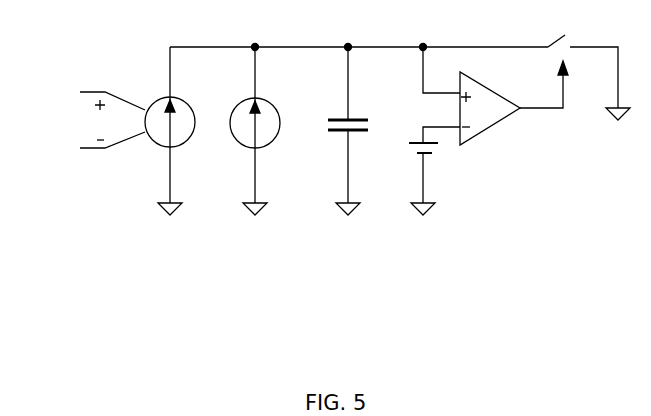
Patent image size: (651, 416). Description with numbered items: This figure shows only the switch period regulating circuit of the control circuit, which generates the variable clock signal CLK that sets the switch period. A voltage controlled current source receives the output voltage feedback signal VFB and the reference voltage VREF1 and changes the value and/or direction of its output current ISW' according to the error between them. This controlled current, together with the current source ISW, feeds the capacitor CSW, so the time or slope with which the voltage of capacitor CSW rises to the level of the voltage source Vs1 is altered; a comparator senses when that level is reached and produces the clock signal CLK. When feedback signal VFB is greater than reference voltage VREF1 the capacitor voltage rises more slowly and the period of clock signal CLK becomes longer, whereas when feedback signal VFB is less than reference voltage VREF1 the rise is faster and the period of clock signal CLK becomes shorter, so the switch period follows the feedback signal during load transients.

The voltage controlled current source output current ISW' is at (178, 131).
The reference voltage VREF1 is at (86, 95).
The output voltage feedback signal VFB is at (94, 146).
The current source ISW is at (263, 131).
The capacitor CSW is at (356, 131).
The voltage source Vs1 is at (437, 179).
The clock signal CLK is at (547, 105).